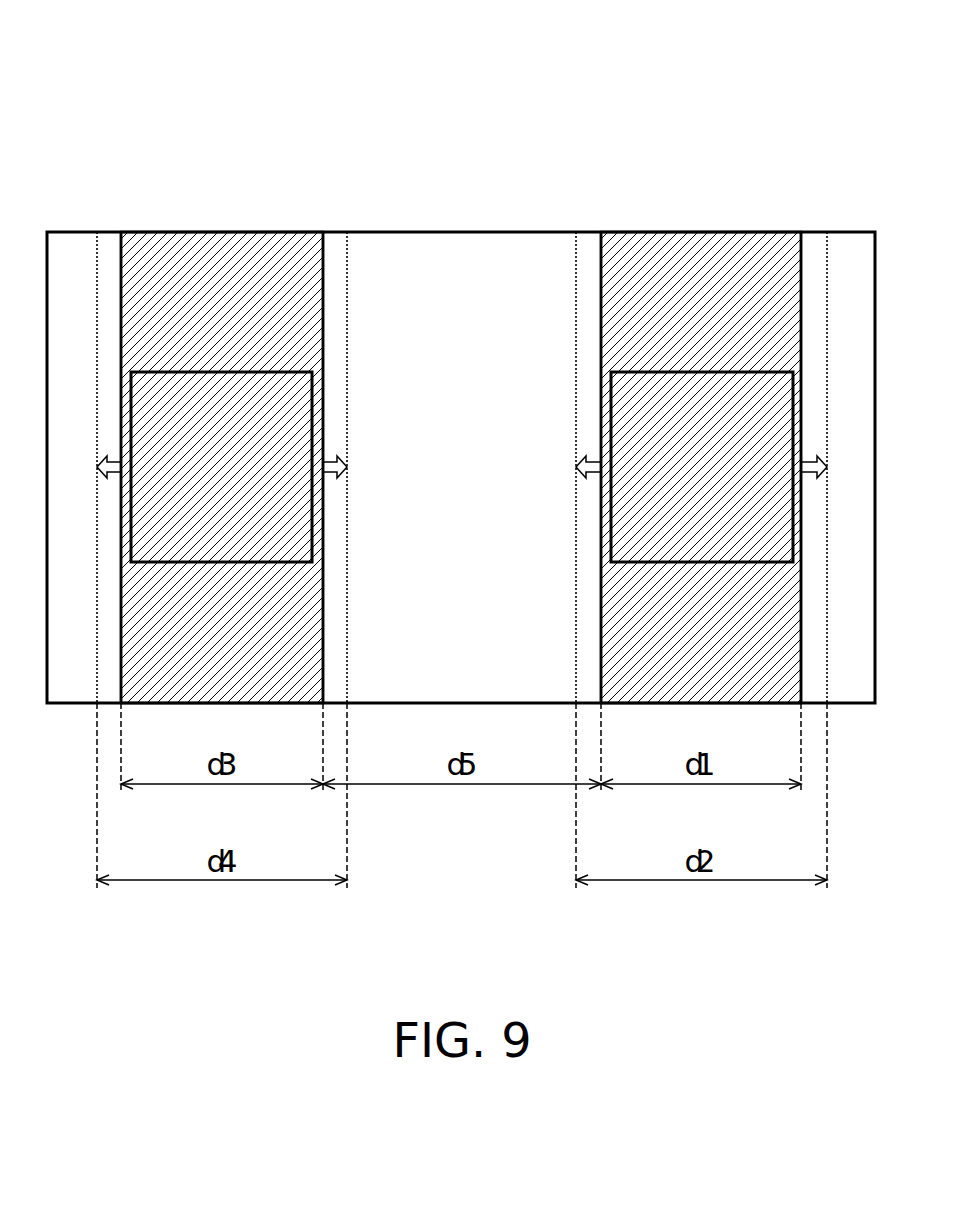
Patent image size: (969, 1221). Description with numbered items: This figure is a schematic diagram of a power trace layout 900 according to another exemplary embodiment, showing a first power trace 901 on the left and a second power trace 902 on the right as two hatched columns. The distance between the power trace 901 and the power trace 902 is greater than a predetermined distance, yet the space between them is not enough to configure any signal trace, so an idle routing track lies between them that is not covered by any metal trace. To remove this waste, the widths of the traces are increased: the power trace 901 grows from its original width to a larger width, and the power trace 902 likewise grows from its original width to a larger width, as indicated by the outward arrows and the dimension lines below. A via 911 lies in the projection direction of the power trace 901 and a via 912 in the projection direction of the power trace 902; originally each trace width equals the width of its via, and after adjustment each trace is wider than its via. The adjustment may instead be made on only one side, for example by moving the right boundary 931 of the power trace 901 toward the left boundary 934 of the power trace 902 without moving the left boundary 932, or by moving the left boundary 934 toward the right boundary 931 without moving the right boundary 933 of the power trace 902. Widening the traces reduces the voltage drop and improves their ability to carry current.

The semiconductor structure 900 is at (846, 44).
The power trace 901 is at (183, 255).
The power trace 902 is at (655, 255).
The via 911 is at (222, 368).
The via 912 is at (705, 368).
The right boundary 931 is at (322, 267).
The left boundary 932 is at (122, 267).
The right boundary 933 is at (802, 267).
The left boundary 934 is at (602, 267).